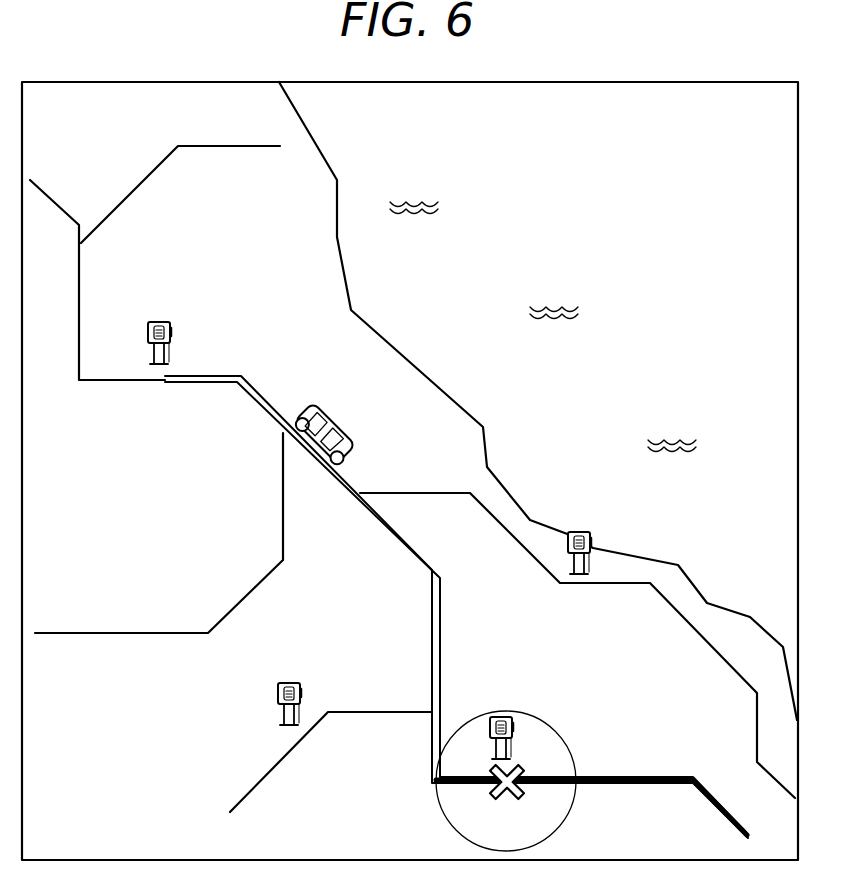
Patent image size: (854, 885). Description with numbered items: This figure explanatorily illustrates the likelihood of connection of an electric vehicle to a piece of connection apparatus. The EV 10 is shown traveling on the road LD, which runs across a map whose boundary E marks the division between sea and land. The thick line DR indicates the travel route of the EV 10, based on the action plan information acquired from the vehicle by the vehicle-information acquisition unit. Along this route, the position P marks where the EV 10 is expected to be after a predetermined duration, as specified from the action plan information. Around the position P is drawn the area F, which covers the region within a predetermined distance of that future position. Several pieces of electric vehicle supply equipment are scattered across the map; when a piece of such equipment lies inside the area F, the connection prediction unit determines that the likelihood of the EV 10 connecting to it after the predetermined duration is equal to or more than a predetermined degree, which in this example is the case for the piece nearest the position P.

The road LD is at (80, 252).
The boundary E is at (344, 262).
The travel route DR is at (441, 610).
The EV 10 is at (330, 408).
The position P is at (522, 765).
The area F is at (573, 808).